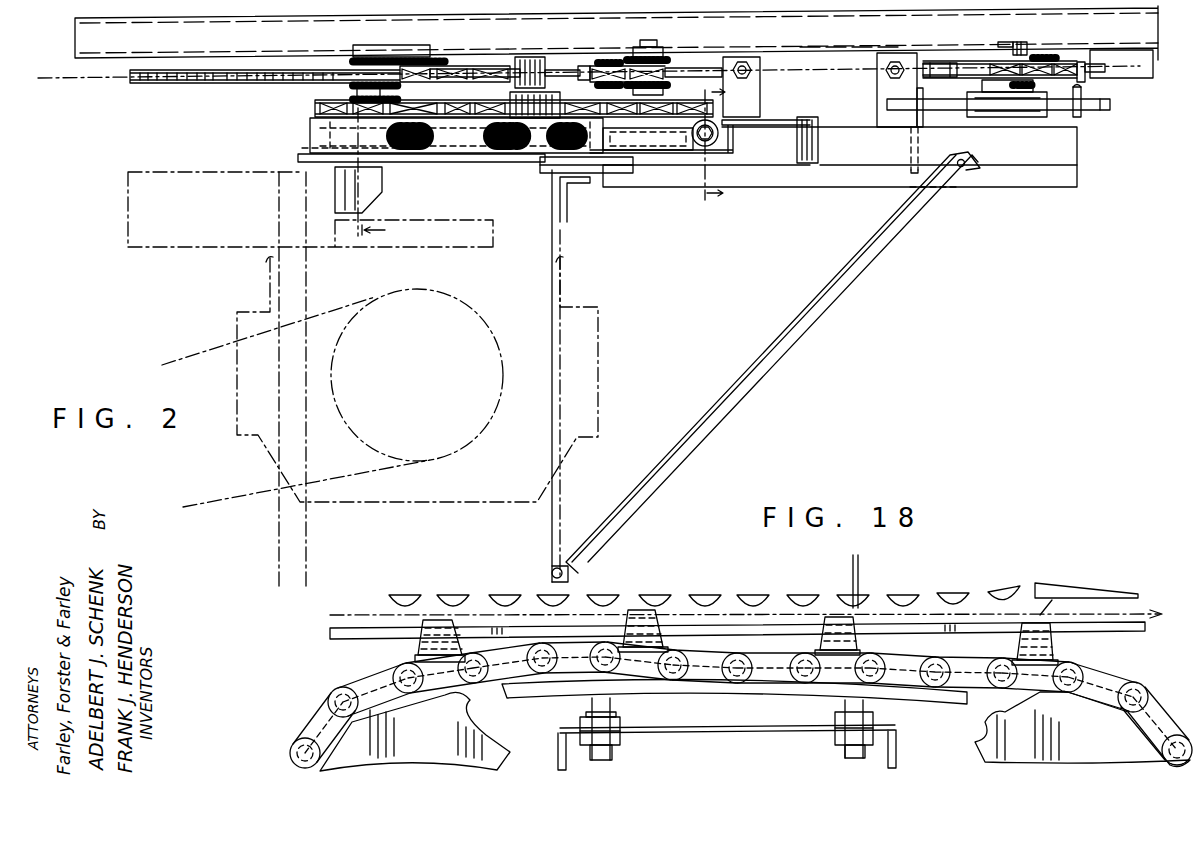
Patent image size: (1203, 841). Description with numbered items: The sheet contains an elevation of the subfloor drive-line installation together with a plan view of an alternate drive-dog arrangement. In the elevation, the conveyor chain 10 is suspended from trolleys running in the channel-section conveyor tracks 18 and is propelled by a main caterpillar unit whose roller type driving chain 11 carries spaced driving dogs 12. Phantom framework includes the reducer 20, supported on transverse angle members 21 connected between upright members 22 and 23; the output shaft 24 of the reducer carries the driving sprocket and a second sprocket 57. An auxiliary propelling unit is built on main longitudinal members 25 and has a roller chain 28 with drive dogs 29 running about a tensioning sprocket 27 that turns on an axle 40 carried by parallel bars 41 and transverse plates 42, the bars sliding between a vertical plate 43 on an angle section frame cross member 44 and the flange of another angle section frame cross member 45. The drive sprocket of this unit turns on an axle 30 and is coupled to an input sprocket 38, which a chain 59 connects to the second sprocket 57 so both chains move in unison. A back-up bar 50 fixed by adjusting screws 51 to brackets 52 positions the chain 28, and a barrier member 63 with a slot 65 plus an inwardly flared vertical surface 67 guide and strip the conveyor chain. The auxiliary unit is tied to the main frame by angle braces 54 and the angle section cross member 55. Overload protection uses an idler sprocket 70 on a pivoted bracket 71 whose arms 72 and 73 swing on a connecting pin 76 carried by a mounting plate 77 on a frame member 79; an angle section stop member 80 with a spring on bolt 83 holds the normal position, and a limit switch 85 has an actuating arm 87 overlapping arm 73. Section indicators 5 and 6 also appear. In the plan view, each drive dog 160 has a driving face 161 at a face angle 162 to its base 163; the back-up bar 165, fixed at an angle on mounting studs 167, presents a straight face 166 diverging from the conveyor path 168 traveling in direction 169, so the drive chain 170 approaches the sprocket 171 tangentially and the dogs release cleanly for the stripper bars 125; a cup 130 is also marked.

In FIG. 2, the conveyor tracks 18 is at (272, 48).
In FIG. 2, the conveyor chain 10 is at (92, 80).
In FIG. 2, the roller type driving chain 11 is at (228, 83).
In FIG. 2, the output shaft 24 is at (428, 45).
In FIG. 2, the driving dogs 12 is at (522, 72).
In FIG. 2, the inwardly flared vertical surface 67 is at (525, 60).
In FIG. 2, the drive dogs 29 is at (563, 68).
In FIG. 2, the slot 65 is at (583, 66).
In FIG. 2, the barrier member 63 is at (607, 60).
In FIG. 2, the axle 30 is at (652, 45).
In FIG. 2, the input sprocket 38 is at (682, 92).
In FIG. 2, the roller chain 28 is at (710, 67).
In FIG. 2, the back-up bar 50 is at (848, 63).
In FIG. 2, the adjusting screws 51 is at (750, 72).
In FIG. 2, the brackets 52 is at (757, 98).
In FIG. 2, the section line 5 is at (723, 147).
In FIG. 2, the actuating arm 87 is at (748, 125).
In FIG. 2, the bolt 83 is at (703, 146).
In FIG. 2, the arm 73 is at (679, 145).
In FIG. 2, the main longitudinal members 25 is at (805, 177).
In FIG. 2, the angle section stop member 80 is at (740, 155).
In FIG. 2, the limit switch 85 is at (818, 148).
In FIG. 2, the angle section frame cross member 44 is at (909, 156).
In FIG. 2, the vertical plate 43 is at (917, 117).
In FIG. 2, the tensioning sprocket 27 is at (968, 60).
In FIG. 2, the axle 40 is at (1017, 45).
In FIG. 2, the transverse plates 42 is at (1017, 97).
In FIG. 2, the parallel bars 41 is at (1112, 104).
In FIG. 2, the angle section frame cross member 45 is at (1077, 117).
In FIG. 2, the second sprocket 57 is at (353, 98).
In FIG. 2, the chain 59 is at (311, 113).
In FIG. 2, the idler sprocket 70 is at (545, 118).
In FIG. 2, the section line 6 is at (344, 175).
In FIG. 2, the arm 72 is at (423, 162).
In FIG. 2, the mounting plate 77 is at (383, 172).
In FIG. 2, the connecting pin 76 is at (302, 150).
In FIG. 2, the frame member 79 is at (217, 192).
In FIG. 2, the bracket 71 is at (547, 171).
In FIG. 2, the angle section cross member 55 is at (564, 193).
In FIG. 2, the upright members 22 is at (297, 560).
In FIG. 2, the transverse angle members 21 is at (273, 293).
In FIG. 2, the reducer 20 is at (410, 492).
In FIG. 2, the upright members 23 is at (563, 522).
In FIG. 2, the angle braces 54 is at (793, 338).
In FIG. 18, the stripper bars 125 is at (1110, 630).
In FIG. 18, the direction of travel 169 is at (1140, 585).
In FIG. 18, the face angle 162 is at (860, 568).
In FIG. 18, the path of conveyor chain 168 is at (920, 610).
In FIG. 18, the cup 130 is at (1007, 590).
In FIG. 18, the drive dogs 160 is at (420, 646).
In FIG. 18, the driving face 161 is at (663, 600).
In FIG. 18, the base 163 is at (818, 652).
In FIG. 18, the drive chain 170 is at (955, 668).
In FIG. 18, the straight face 166 is at (758, 697).
In FIG. 18, the back-up bar 165 is at (680, 698).
In FIG. 18, the mounting studs 167 is at (588, 707).
In FIG. 18, the sprocket 171 is at (984, 733).